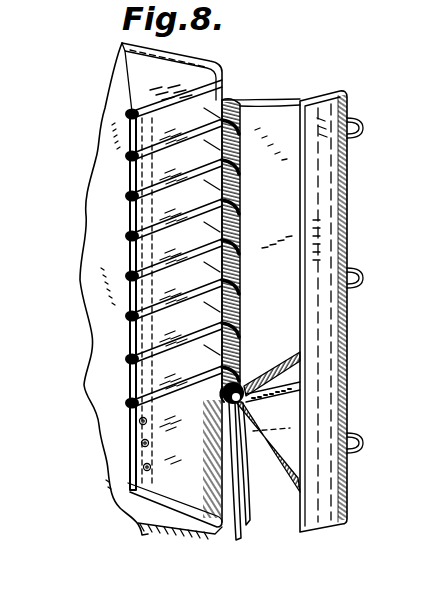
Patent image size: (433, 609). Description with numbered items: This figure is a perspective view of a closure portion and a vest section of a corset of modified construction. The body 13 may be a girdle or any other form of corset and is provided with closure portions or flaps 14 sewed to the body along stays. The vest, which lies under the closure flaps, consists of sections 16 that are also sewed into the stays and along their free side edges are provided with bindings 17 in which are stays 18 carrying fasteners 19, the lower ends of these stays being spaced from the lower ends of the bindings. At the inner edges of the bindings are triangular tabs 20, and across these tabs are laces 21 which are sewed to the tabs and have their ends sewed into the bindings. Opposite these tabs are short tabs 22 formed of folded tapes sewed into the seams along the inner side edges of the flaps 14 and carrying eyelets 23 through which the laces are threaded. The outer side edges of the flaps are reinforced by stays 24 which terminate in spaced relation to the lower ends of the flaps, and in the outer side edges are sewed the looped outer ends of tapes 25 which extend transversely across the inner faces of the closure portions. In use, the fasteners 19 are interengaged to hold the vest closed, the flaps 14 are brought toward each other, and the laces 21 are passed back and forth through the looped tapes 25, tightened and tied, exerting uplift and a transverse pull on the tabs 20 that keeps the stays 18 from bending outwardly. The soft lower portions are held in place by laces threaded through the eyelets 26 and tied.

The body 13 is at (140, 79).
The closure portions or flaps 14 is at (162, 126).
The vest sections 16 is at (256, 125).
The bindings 17 is at (318, 117).
The stays 18 is at (338, 318).
The fasteners 19 is at (363, 132).
The triangular tabs 20 is at (295, 360).
The laces 21 is at (233, 477).
The short tabs 22 is at (205, 397).
The eyelets 23 is at (232, 386).
The stays 24 is at (145, 204).
The tapes 25 is at (84, 212).
The eyelets 26 is at (143, 467).